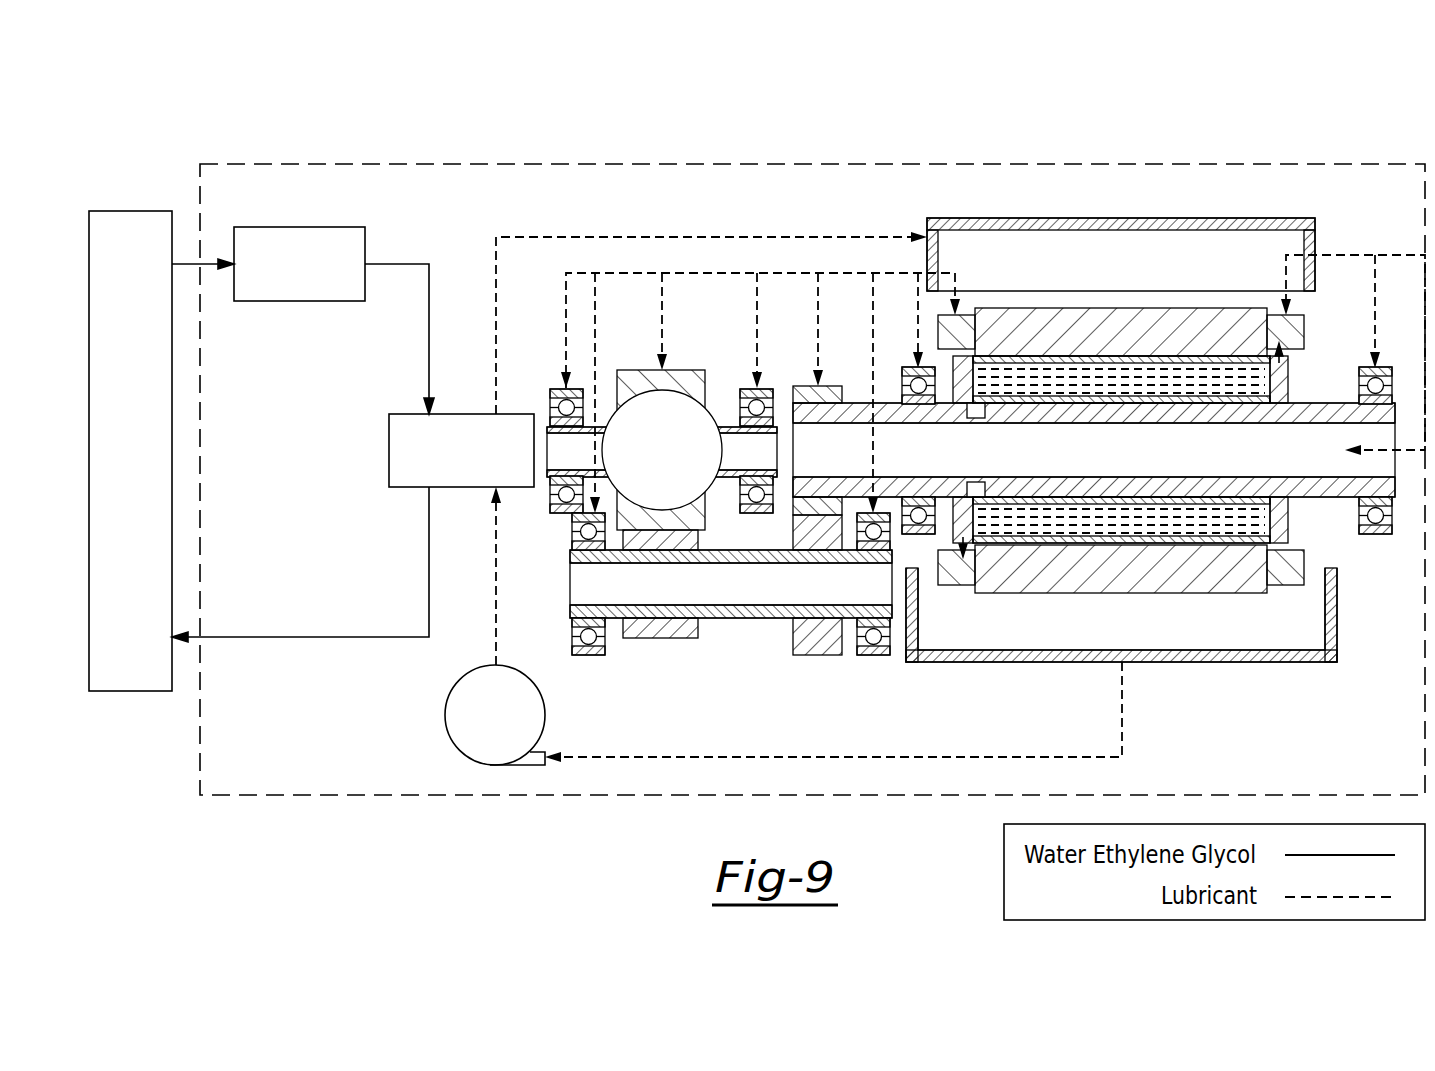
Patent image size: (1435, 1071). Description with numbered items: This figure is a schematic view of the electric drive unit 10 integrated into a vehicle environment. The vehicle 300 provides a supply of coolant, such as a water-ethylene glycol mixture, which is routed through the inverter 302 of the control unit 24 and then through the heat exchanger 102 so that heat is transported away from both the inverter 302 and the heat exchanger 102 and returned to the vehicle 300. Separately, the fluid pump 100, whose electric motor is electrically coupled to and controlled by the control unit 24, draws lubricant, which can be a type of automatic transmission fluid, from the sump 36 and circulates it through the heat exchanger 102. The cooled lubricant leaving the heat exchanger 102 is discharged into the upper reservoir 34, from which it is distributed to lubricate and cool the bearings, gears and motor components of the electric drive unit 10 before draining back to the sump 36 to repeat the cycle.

The electric drive unit 10 is at (1153, 86).
The control unit 24 is at (356, 281).
The upper reservoir 34 is at (975, 248).
The sump 36 is at (1215, 630).
The fluid pump 100 is at (447, 712).
The heat exchanger 102 is at (389, 467).
The vehicle 300 is at (122, 211).
The inverter 302 is at (262, 301).